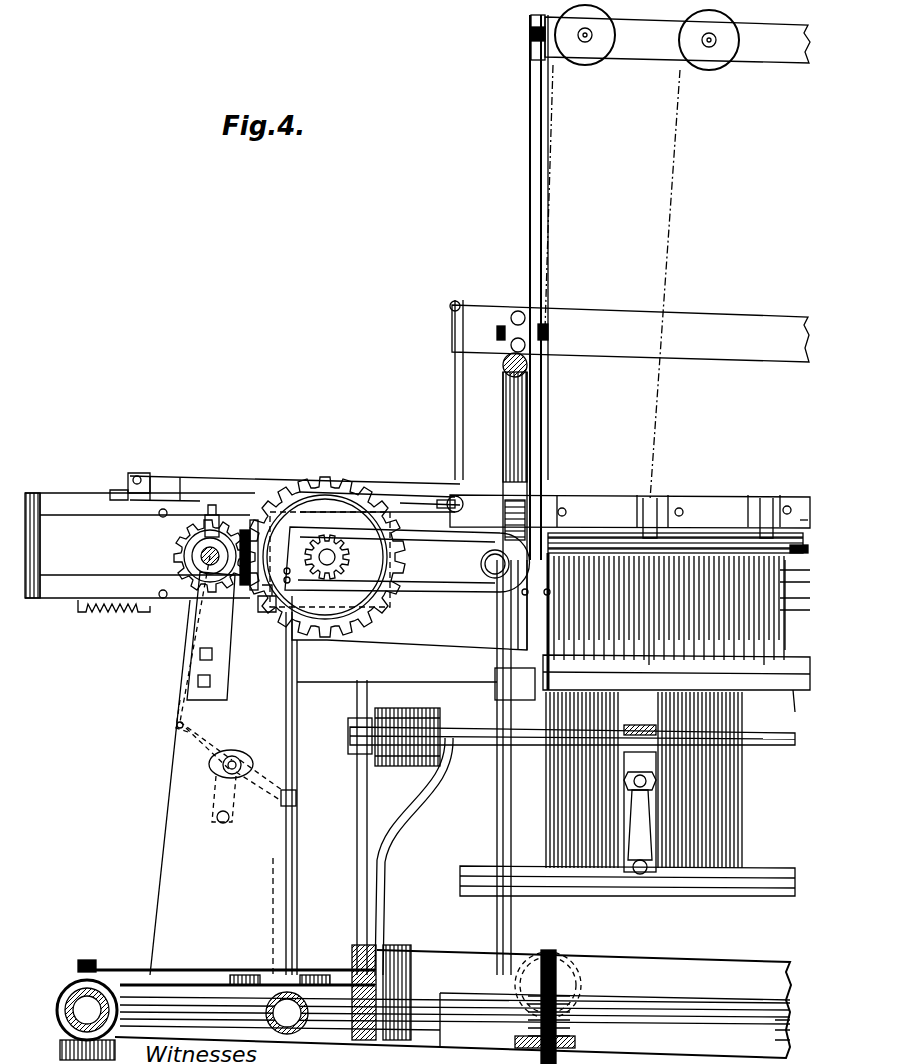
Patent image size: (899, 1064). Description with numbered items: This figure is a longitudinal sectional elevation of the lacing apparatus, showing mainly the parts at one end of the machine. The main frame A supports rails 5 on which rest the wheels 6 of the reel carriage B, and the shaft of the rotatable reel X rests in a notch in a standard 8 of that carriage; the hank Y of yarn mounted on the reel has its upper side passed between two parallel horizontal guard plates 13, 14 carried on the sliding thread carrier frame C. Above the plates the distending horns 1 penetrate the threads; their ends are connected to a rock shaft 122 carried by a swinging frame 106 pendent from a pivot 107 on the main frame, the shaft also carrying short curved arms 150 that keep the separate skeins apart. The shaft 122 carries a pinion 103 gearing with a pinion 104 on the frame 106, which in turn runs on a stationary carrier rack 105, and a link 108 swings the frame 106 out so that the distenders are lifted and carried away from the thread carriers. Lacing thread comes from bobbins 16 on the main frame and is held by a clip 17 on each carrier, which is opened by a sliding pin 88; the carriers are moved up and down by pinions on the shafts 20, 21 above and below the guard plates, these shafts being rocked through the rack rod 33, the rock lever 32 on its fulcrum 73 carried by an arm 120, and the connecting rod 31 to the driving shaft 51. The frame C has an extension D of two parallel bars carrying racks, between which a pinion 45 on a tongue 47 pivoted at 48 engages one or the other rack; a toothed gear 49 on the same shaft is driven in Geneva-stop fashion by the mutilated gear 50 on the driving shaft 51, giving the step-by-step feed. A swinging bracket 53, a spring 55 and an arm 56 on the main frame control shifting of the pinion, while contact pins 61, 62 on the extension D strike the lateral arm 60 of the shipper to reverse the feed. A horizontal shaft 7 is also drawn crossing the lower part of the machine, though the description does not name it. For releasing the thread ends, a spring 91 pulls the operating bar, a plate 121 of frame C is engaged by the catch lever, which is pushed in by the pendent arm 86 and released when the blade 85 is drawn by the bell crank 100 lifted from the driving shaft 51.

The bobbins 16 is at (708, 70).
The swinging frame 106 is at (542, 400).
The stationary carrier rack 105 is at (530, 475).
The pivot 107 is at (552, 335).
The pendent arm 86 is at (455, 390).
The spring 91 is at (462, 478).
The plate 121 is at (626, 498).
The clip 17 is at (652, 500).
The sliding pin 88 is at (770, 510).
The upper shaft 20 is at (811, 521).
The guard plate 14 is at (680, 540).
The rock shaft 122 is at (700, 538).
The link 108 is at (550, 540).
The short curved arms 150 is at (720, 658).
The lower shaft 21 is at (785, 642).
The guard plate 13 is at (790, 592).
The distending horns 1 is at (553, 613).
The hank Y is at (520, 828).
The shaft 7 is at (484, 745).
The rotatable reel X is at (778, 760).
The standard 8 is at (357, 800).
The rack rod 33 is at (292, 840).
The frame A is at (162, 800).
The extension D is at (66, 507).
The contact pin 61 is at (78, 610).
The bell crank 100 is at (175, 482).
The blade 85 is at (250, 488).
The pinion 104 is at (465, 503).
The pinion 103 is at (518, 524).
The mutilated gear 50 is at (172, 560).
The driving shaft 51 is at (203, 552).
The arm 56 is at (220, 514).
The swinging bracket 53 is at (205, 518).
The lateral arm 60 is at (212, 627).
The connecting rod 31 is at (182, 703).
The rock lever 32 is at (224, 746).
The fulcrum 73 is at (250, 762).
The arm 120 is at (222, 828).
The toothed gear 49 is at (345, 484).
The tongue 47 is at (407, 559).
The pivot 48 is at (492, 580).
The pinion 45 is at (350, 558).
The spring 55 is at (284, 570).
The contact pin 62 is at (267, 626).
The thread carrier frame C is at (451, 553).
The reel carriage B is at (439, 1004).
The rails 5 is at (345, 1030).
The wheels 6 is at (552, 950).